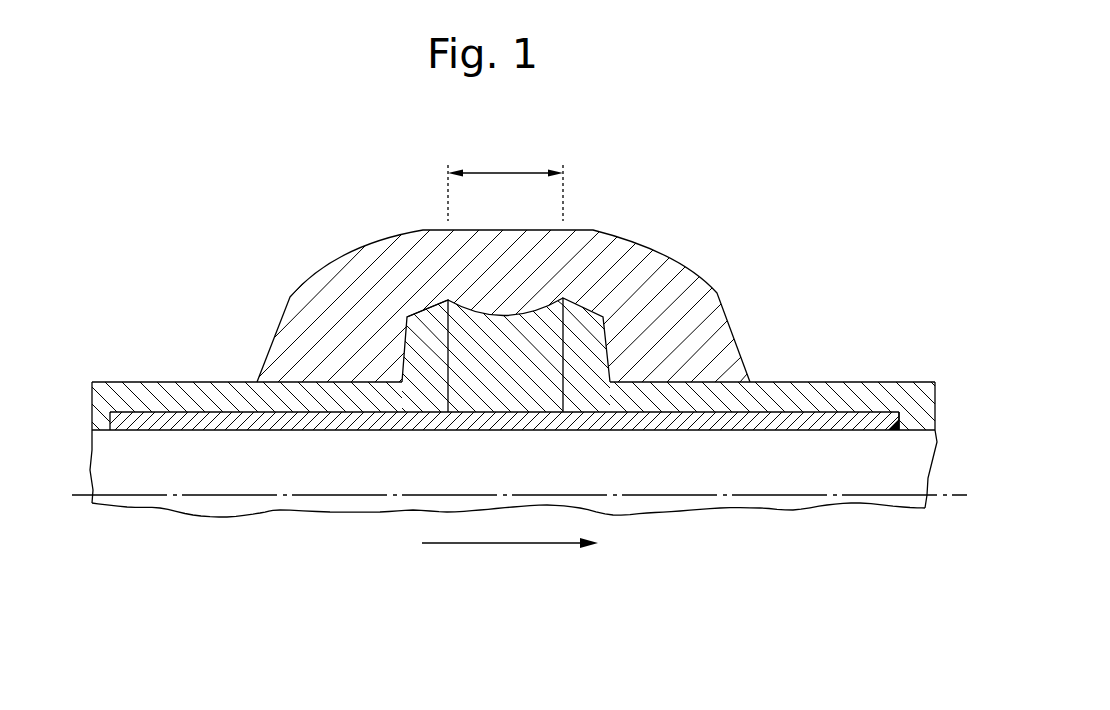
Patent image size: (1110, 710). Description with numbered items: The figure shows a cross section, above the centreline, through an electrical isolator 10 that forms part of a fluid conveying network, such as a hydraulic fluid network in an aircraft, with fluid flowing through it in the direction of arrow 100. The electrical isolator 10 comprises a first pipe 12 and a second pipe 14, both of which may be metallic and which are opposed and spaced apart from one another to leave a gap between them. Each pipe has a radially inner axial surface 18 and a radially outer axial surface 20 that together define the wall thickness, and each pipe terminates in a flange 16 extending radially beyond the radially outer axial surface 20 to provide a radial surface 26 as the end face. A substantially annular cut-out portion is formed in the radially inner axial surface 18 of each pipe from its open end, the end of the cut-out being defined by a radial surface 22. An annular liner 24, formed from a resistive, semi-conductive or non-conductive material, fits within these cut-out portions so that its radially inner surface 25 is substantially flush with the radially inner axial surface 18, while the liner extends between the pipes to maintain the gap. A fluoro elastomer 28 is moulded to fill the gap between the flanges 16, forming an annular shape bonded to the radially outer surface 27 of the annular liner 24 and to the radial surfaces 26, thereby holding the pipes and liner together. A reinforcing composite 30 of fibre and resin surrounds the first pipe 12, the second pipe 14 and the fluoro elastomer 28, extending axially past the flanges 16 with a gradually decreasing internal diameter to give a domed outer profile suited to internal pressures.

The electrical isolator 10 is at (669, 177).
The first pipe 12 is at (120, 382).
The second pipe 14 is at (788, 382).
The flange 16 is at (428, 352).
The radially inner axial surface 18 is at (95, 434).
The radially outer axial surface 20 is at (187, 382).
The radial surface 22 is at (895, 421).
The annular liner 24 is at (722, 421).
The radially inner surface of the annular liner 25 is at (840, 430).
The radial surface 26 is at (446, 301).
The radially outer surface of the annular liner 27 is at (843, 414).
The fluoro elastomer 28 is at (503, 347).
The reinforcing composite 30 is at (593, 270).
The arrow 100 is at (497, 545).